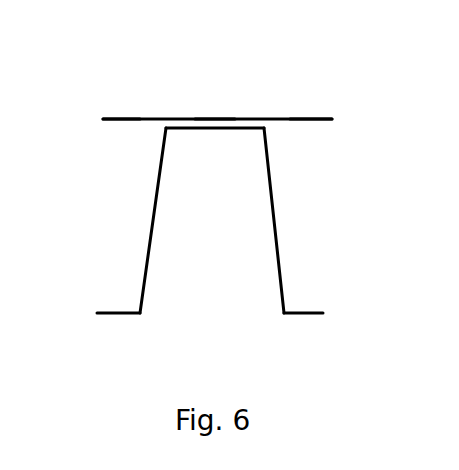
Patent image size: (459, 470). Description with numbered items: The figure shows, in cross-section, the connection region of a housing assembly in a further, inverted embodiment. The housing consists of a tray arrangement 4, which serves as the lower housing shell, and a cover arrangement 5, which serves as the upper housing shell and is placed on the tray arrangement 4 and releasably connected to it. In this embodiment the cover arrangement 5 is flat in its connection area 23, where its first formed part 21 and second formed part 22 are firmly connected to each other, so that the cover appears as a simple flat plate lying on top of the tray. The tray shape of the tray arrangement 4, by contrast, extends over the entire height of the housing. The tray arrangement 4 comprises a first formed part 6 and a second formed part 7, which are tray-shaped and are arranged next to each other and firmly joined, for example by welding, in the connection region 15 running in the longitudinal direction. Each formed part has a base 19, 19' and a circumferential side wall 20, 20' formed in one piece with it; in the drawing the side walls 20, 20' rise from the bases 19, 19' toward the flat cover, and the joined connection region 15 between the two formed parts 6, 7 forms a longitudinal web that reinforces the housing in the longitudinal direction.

The tray arrangement 4 is at (168, 357).
The cover arrangement 5 is at (172, 78).
The first formed part 6 is at (328, 337).
The second formed part 7 is at (110, 330).
The connection region 15 is at (214, 175).
The base 19 is at (326, 284).
The base 19' is at (95, 285).
The circumferential side wall 20 is at (298, 220).
The circumferential side wall 20' is at (123, 220).
The first formed part 21 is at (302, 110).
The second formed part 22 is at (124, 108).
The connection region 23 is at (213, 98).